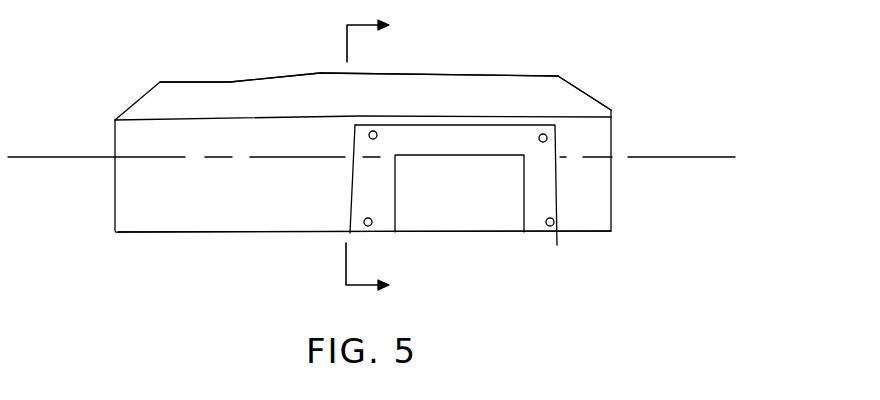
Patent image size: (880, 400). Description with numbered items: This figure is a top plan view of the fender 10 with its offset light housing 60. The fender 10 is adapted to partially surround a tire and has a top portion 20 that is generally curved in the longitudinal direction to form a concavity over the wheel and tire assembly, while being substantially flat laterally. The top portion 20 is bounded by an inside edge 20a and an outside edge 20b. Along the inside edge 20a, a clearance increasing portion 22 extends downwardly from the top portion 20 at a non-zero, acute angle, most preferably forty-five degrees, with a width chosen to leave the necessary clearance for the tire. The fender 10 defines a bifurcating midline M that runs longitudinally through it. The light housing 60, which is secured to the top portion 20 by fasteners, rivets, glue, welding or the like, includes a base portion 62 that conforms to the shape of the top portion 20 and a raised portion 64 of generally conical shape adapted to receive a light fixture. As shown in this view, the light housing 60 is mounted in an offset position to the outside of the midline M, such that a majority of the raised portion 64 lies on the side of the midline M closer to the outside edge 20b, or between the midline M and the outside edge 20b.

The fender 10 is at (97, 84).
The top portion 20 is at (128, 178).
The inside edge 20a is at (568, 113).
The outside edge 20b is at (225, 235).
The clearance increasing portion 22 is at (507, 93).
The light housing 60 is at (505, 258).
The base portion 62 is at (533, 222).
The raised portion 64 is at (472, 220).
The bifurcating midline M is at (688, 155).